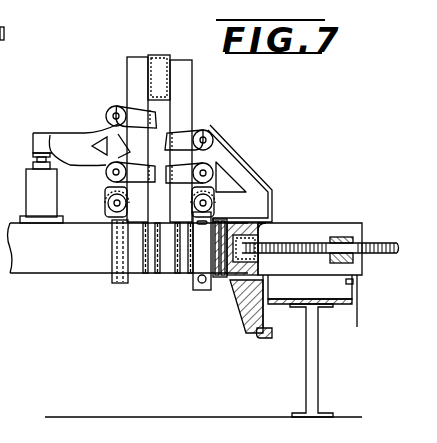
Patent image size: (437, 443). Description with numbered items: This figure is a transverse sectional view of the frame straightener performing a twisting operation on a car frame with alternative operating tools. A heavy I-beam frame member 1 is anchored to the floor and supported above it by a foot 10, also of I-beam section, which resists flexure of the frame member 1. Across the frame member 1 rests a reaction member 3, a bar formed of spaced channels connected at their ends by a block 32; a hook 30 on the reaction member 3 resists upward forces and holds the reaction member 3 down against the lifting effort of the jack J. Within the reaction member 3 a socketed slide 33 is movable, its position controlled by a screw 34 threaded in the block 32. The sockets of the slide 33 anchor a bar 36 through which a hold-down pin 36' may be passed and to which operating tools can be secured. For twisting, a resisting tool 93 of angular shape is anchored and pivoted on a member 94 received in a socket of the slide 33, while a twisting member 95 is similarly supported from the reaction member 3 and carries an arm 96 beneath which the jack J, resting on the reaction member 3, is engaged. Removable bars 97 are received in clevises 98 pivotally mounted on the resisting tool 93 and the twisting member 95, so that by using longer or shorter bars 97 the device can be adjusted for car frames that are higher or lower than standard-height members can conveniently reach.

The frame member 1 is at (336, 306).
The reaction member 3 is at (60, 275).
The foot 10 is at (318, 380).
The hook 30 is at (262, 338).
The block 32 is at (348, 238).
The socketed slide 33 is at (112, 246).
The screw 34 is at (306, 246).
The bar 36 is at (173, 268).
The hold-down pin 36' is at (212, 270).
The resisting tool 93 is at (232, 160).
The member 94 is at (100, 217).
The twisting member 95 is at (104, 162).
The arm 96 is at (55, 135).
The removable bar 97 is at (128, 70).
The clevis 98 is at (110, 128).
The jack J is at (27, 183).